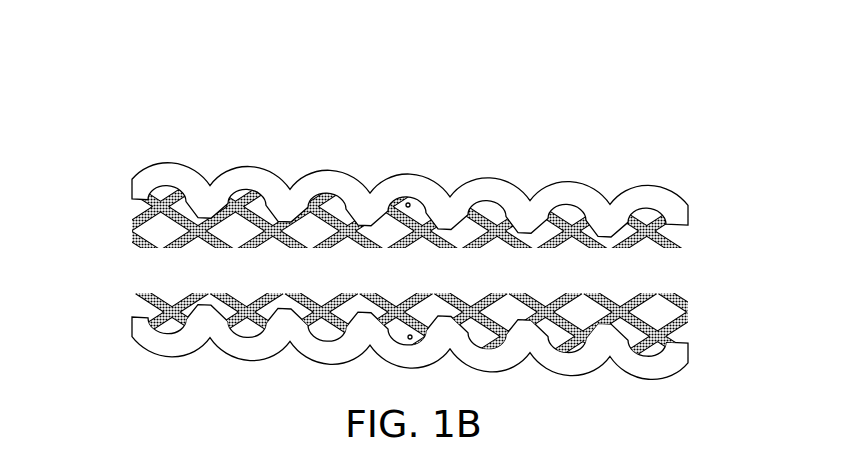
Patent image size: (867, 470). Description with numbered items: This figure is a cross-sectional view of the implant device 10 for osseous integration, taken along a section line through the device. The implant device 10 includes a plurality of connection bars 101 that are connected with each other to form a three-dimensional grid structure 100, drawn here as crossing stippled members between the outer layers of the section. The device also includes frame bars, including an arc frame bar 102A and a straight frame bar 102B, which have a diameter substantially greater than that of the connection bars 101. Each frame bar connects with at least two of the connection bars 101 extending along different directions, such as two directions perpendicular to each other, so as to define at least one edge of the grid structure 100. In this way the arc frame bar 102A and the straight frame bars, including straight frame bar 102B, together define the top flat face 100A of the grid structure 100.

The implant device 10 is at (86, 142).
The 3D grid structure 100 is at (702, 182).
The top flat face 100A is at (542, 186).
The connection bars 101 is at (634, 280).
The arc frame bar 102A is at (651, 198).
The straight frame bar 102B is at (667, 365).